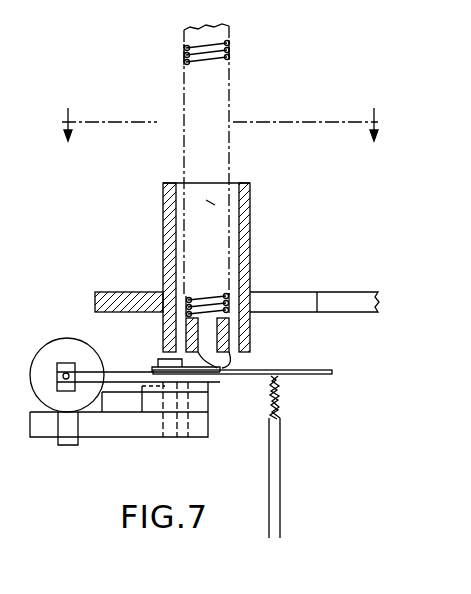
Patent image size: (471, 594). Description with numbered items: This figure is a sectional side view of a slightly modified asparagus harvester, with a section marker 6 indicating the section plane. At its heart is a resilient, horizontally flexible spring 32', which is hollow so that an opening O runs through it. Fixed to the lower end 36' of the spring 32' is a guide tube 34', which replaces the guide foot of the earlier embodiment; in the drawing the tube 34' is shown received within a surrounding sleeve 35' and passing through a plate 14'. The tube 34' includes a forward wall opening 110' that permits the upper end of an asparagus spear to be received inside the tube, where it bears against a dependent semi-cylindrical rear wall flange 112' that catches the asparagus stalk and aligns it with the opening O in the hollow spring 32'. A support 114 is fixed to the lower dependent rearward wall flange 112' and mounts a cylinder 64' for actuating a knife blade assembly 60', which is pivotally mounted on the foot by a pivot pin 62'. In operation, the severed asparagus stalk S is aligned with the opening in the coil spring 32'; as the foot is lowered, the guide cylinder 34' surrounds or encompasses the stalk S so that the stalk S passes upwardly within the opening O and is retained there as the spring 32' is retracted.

The section line 6- 6 is at (220, 115).
The resilient, horizontally flexible spring 32' is at (235, 159).
The opening O is at (213, 207).
The cylinder 35' is at (233, 267).
The lower end 36' is at (163, 281).
The plate 14' is at (237, 280).
The guide tube 34' is at (243, 335).
The dependent semi-cylindrical rear wall flange 112' is at (163, 353).
The forward wall opening 110' is at (251, 356).
The knife blade assembly 60' is at (256, 392).
The cylinder 64' is at (111, 365).
The pivot pin 62' is at (155, 399).
The support 114 is at (104, 437).
The asparagus stalk S is at (280, 466).